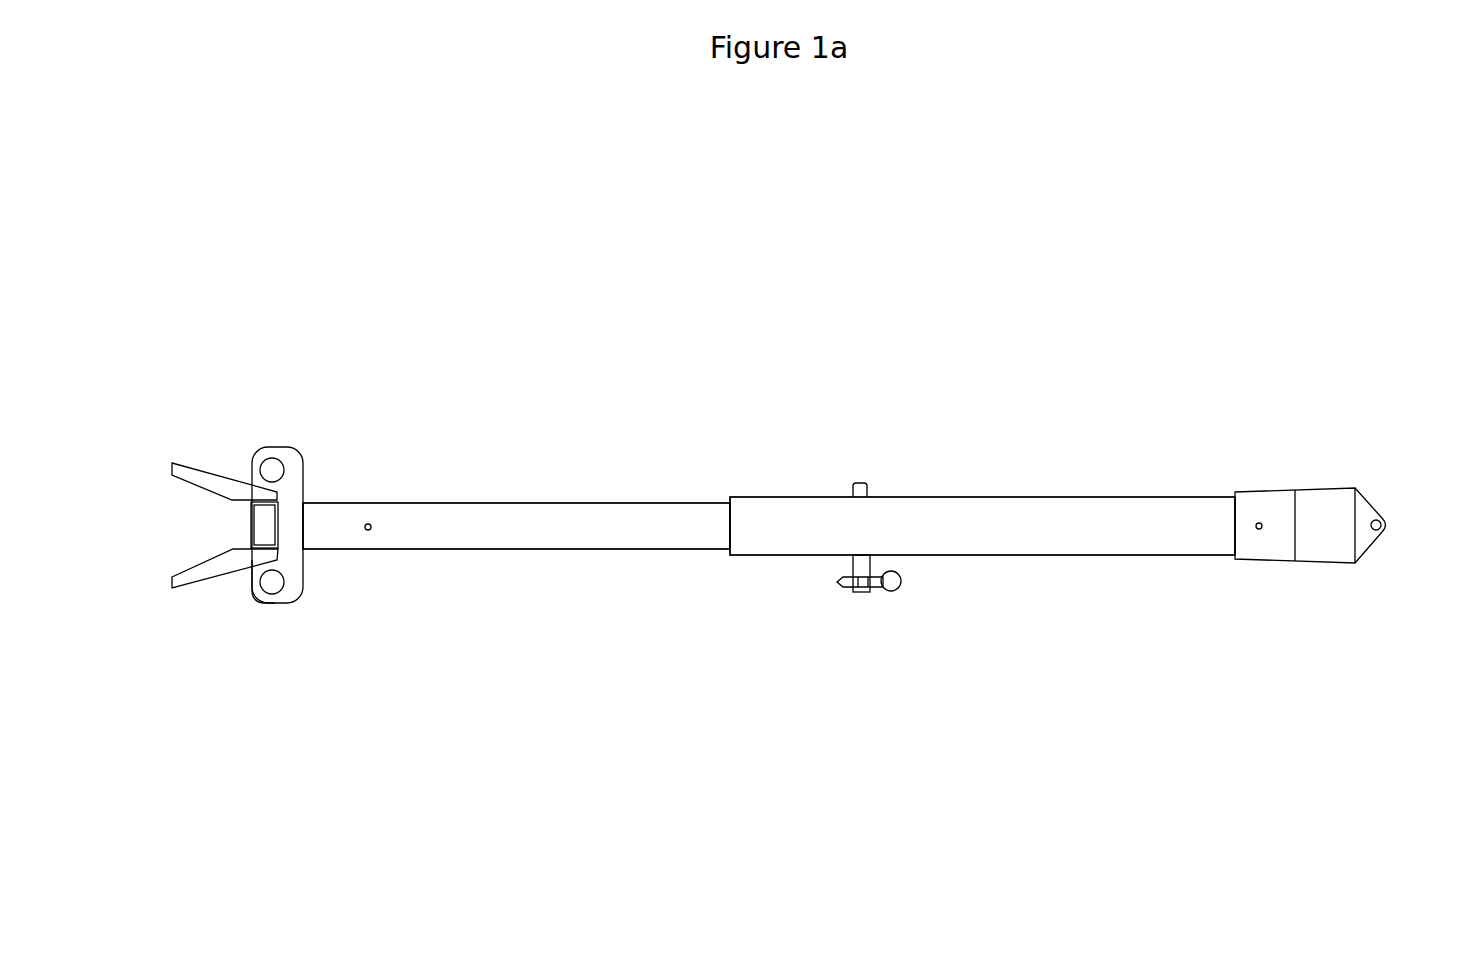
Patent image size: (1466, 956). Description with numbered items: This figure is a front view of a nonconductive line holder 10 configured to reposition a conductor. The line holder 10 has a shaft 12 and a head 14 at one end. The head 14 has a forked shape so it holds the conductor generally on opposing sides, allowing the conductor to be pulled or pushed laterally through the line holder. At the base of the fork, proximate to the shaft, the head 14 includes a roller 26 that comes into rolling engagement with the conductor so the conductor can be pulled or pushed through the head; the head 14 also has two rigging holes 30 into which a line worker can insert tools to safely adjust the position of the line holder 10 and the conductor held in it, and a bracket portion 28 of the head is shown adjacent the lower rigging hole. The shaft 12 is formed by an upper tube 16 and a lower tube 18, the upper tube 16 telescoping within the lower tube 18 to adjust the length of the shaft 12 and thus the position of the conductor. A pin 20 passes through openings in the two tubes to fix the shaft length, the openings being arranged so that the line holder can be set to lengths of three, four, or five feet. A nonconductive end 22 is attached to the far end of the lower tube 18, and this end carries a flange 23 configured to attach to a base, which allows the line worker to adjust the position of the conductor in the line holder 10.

The nonconductive line holder 10 is at (1078, 163).
The shaft 12 is at (692, 473).
The head 14 is at (226, 464).
The upper tube 16 is at (522, 499).
The lower tube 18 is at (1008, 490).
The pin 20 is at (882, 596).
The nonconductive end 22 is at (1320, 484).
The flange 23 is at (1372, 505).
The roller 26 is at (243, 527).
The bracket 28 is at (253, 587).
The rigging holes 30 is at (272, 582).